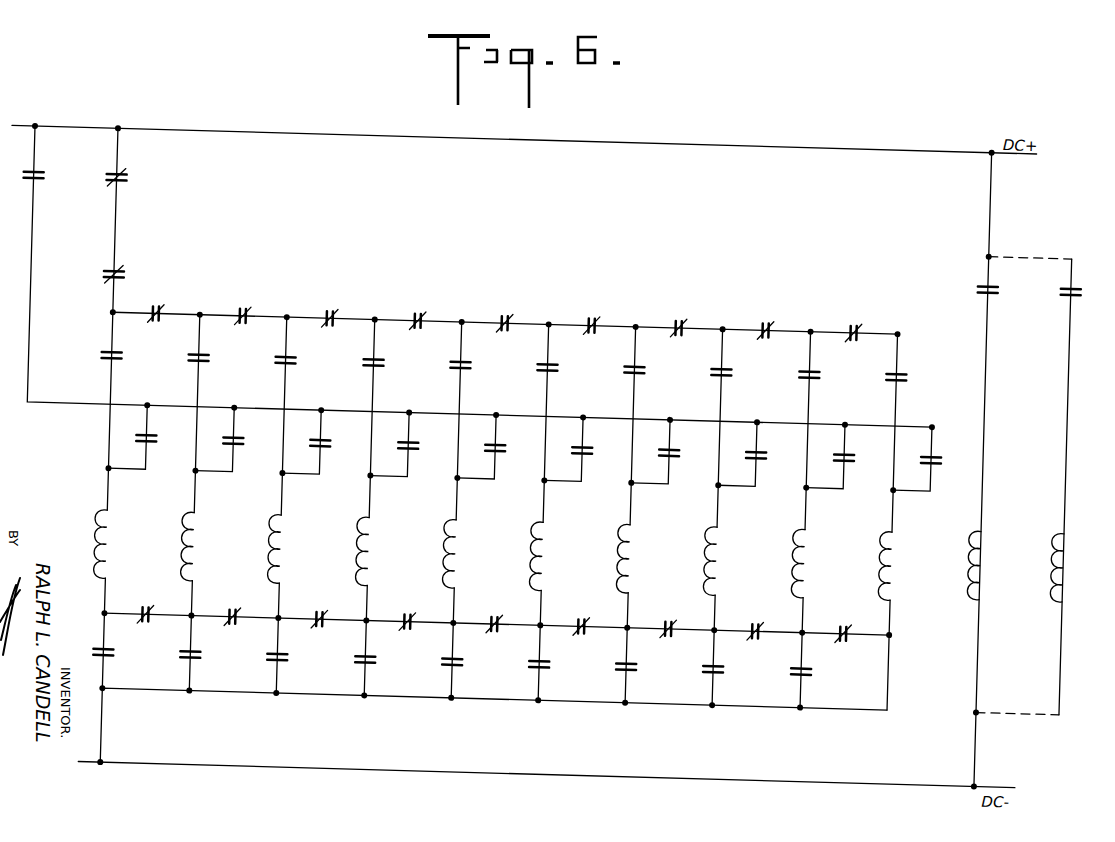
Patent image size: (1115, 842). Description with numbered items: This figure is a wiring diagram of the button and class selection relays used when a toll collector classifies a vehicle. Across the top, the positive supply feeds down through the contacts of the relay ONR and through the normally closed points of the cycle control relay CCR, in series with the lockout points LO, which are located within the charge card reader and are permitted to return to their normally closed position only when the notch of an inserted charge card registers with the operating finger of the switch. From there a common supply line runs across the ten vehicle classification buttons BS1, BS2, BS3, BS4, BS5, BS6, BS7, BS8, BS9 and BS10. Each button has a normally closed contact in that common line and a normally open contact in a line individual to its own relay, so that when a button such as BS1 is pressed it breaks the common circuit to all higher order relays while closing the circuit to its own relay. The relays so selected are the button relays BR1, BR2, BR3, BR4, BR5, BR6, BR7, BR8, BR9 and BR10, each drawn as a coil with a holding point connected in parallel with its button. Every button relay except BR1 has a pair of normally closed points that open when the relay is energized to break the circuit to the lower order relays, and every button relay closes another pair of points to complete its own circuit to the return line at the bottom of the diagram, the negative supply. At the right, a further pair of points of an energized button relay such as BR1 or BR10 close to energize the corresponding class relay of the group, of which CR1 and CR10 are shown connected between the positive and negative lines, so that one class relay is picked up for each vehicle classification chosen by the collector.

The on relay ONR is at (471, 276).
The cycle control relay CCR is at (127, 221).
The lockout contacts LO is at (92, 274).
The vehicle classification button BS1 is at (138, 379).
The vehicle classification button BS2 is at (225, 381).
The vehicle classification button BS3 is at (312, 384).
The vehicle classification button BS4 is at (400, 386).
The vehicle classification button BS5 is at (487, 389).
The vehicle classification button BS6 is at (574, 391).
The vehicle classification button BS7 is at (661, 394).
The vehicle classification button BS8 is at (748, 396).
The vehicle classification button BS9 is at (836, 398).
The vehicle classification button BS10 is at (914, 413).
The button relay BR1 is at (134, 547).
The button relay BR2 is at (196, 549).
The button relay BR3 is at (283, 551).
The button relay BR4 is at (371, 554).
The button relay BR5 is at (458, 556).
The button relay BR6 is at (545, 558).
The button relay BR7 is at (632, 561).
The button relay BR8 is at (719, 563).
The button relay BR9 is at (807, 566).
The button relay BR10 is at (961, 494).
The class relay CR1 is at (994, 566).
The class relay CR10 is at (1073, 568).